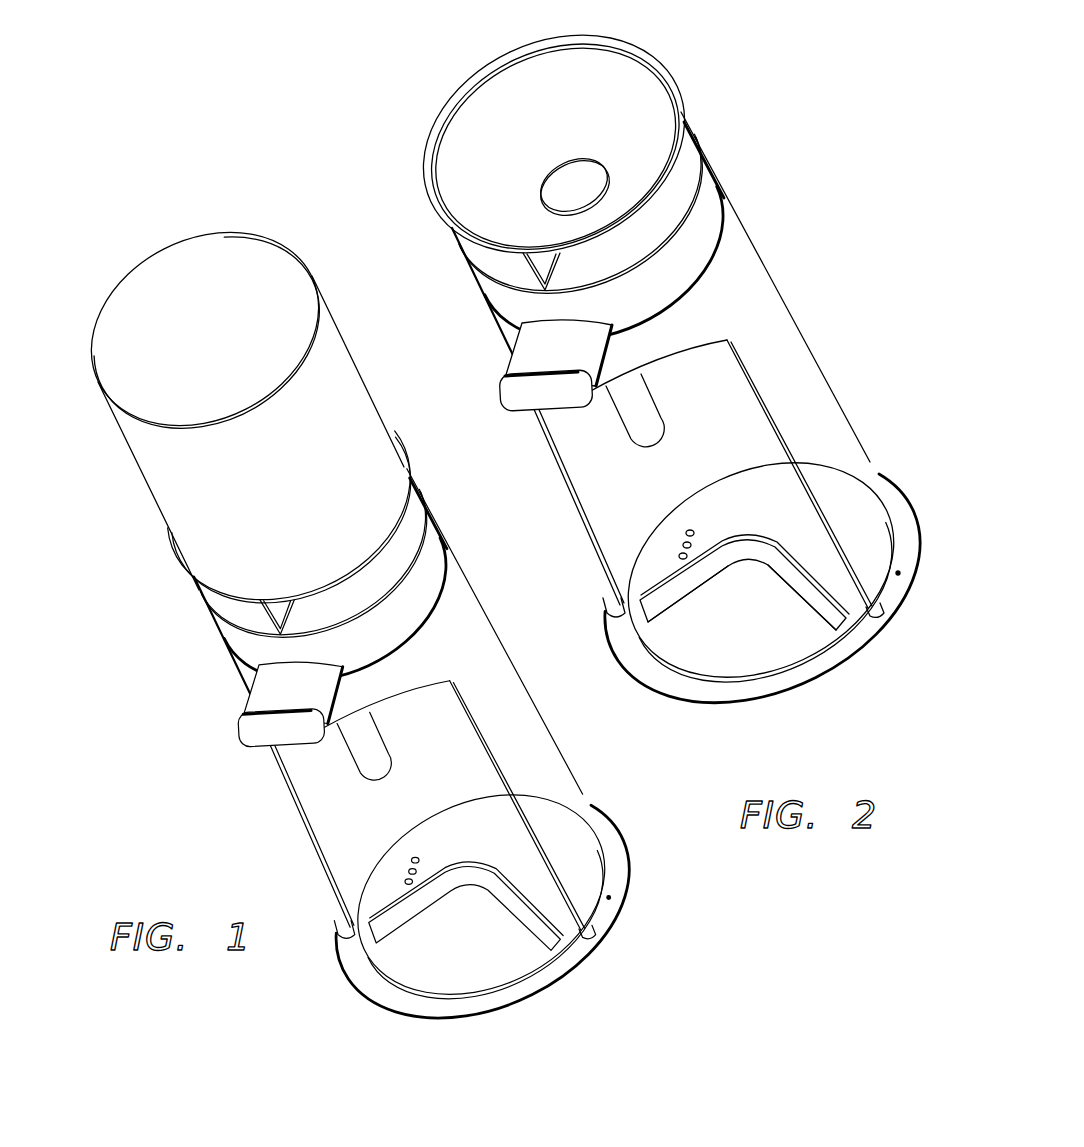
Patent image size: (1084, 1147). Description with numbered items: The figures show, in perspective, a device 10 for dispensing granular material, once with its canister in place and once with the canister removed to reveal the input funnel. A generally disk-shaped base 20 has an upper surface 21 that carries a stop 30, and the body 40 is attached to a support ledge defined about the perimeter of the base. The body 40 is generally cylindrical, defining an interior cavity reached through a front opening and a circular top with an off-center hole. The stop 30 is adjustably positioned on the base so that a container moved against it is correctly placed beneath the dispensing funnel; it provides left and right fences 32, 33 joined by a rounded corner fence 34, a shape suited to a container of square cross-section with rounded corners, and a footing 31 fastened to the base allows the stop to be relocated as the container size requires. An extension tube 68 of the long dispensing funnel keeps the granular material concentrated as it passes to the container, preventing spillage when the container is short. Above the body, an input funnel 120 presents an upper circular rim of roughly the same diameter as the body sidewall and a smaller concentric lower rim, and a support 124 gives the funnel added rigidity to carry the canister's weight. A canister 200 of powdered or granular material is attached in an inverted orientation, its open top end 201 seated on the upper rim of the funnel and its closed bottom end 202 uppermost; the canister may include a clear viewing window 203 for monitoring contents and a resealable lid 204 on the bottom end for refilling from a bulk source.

In FIG. 1, the device 10 is at (123, 607).
In FIG. 2, the base 20 is at (772, 707).
In FIG. 1, the upper surface 21 is at (470, 947).
In FIG. 1, the stop 30 is at (413, 927).
In FIG. 1, the footing 31 is at (507, 890).
In FIG. 2, the left fence 32 is at (690, 583).
In FIG. 2, the right fence 33 is at (808, 600).
In FIG. 2, the rounded corner fence 34 is at (752, 528).
In FIG. 2, the body 40 is at (758, 238).
In FIG. 1, the extension tube 68 is at (357, 773).
In FIG. 2, the input funnel 120 is at (690, 92).
In FIG. 1, the support 124 is at (267, 622).
In FIG. 1, the canister 200 is at (288, 232).
In FIG. 1, the open top end 201 is at (330, 575).
In FIG. 1, the closed bottom end 202 is at (187, 295).
In FIG. 1, the clear viewing window 203 is at (153, 505).
In FIG. 1, the resealable lid 204 is at (277, 393).